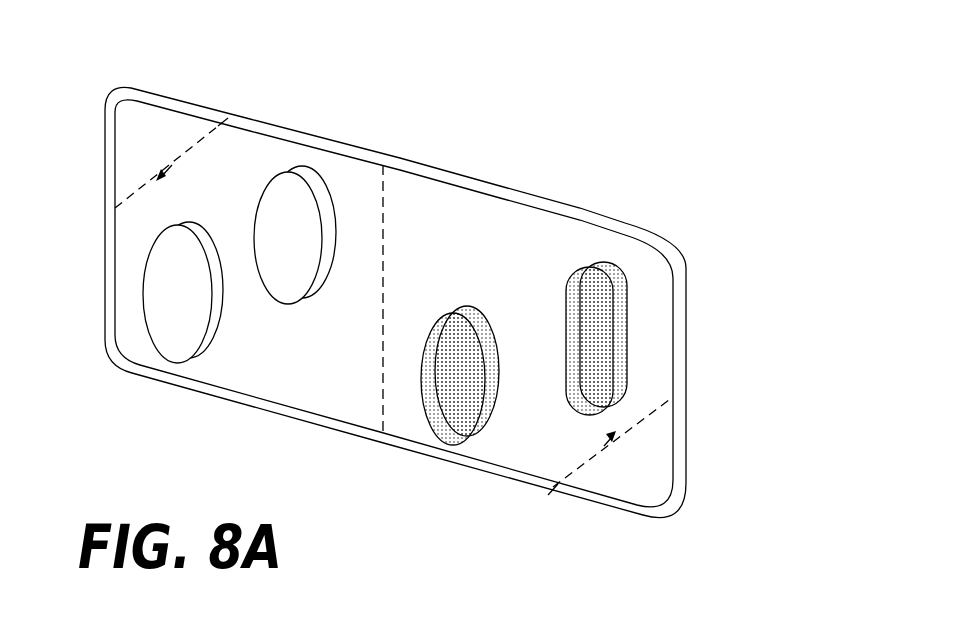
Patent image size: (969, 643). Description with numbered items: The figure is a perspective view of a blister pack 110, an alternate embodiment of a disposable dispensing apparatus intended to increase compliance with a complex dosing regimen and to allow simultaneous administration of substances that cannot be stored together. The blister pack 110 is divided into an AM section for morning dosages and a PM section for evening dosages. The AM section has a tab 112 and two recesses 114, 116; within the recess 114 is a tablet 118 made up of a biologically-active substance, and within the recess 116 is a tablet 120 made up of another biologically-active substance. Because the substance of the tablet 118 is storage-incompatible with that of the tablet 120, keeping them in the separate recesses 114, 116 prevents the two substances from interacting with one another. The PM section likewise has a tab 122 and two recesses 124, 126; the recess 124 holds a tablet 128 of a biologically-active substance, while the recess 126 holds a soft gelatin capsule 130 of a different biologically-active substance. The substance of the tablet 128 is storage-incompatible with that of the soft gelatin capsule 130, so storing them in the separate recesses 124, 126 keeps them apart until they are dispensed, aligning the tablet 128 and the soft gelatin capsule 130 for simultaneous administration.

The blister pack 110 is at (647, 59).
The tab 112 is at (140, 92).
The recess 114 is at (160, 330).
The recess 116 is at (297, 197).
The tablet 118 is at (218, 308).
The tablet 120 is at (293, 172).
The tab 122 is at (660, 478).
The recess 124 is at (445, 435).
The recess 126 is at (593, 270).
The tablet 128 is at (490, 387).
The soft gelatin capsule 130 is at (630, 310).